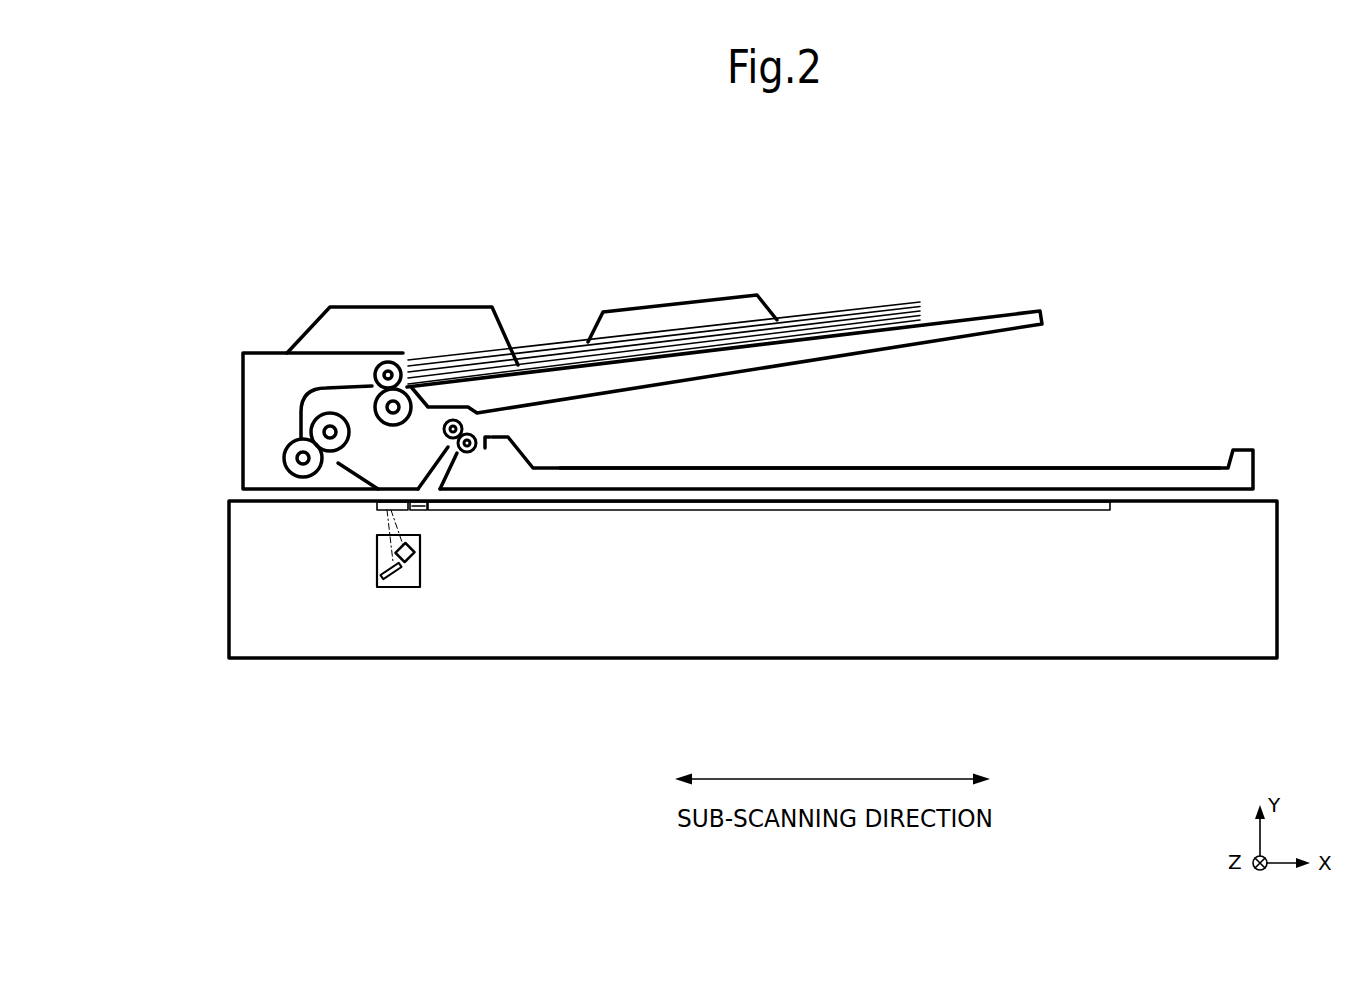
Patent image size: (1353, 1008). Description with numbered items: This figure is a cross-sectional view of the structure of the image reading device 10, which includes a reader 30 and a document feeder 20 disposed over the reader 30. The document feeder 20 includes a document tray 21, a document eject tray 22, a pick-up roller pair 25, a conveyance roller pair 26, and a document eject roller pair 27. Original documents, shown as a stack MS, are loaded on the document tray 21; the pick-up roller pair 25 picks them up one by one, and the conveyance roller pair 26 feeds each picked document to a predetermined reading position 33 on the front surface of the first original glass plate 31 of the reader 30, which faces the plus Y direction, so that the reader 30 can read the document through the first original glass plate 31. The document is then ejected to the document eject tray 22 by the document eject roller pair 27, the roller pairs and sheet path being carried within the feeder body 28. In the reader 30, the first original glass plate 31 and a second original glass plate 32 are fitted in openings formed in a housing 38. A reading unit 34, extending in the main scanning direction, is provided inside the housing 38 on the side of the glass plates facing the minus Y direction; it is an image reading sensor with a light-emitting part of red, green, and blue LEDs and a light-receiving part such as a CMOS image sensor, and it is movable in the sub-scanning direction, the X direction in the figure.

The image reading device 10 is at (694, 243).
The document feeder 20 is at (1180, 411).
The document tray 21 is at (995, 314).
The document eject tray 22 is at (1080, 467).
The pick-up roller pair 25 is at (384, 362).
The conveyance roller pair 26 is at (311, 420).
The document eject roller pair 27 is at (462, 431).
The ADF housing 28 is at (243, 466).
The reader 30 is at (1116, 694).
The first original glass plate 31 is at (377, 511).
The second original glass plate 32 is at (856, 512).
The reading position 33 is at (411, 506).
The reading unit 34 is at (401, 590).
The housing 38 is at (1278, 632).
The medium sheets MS is at (806, 312).